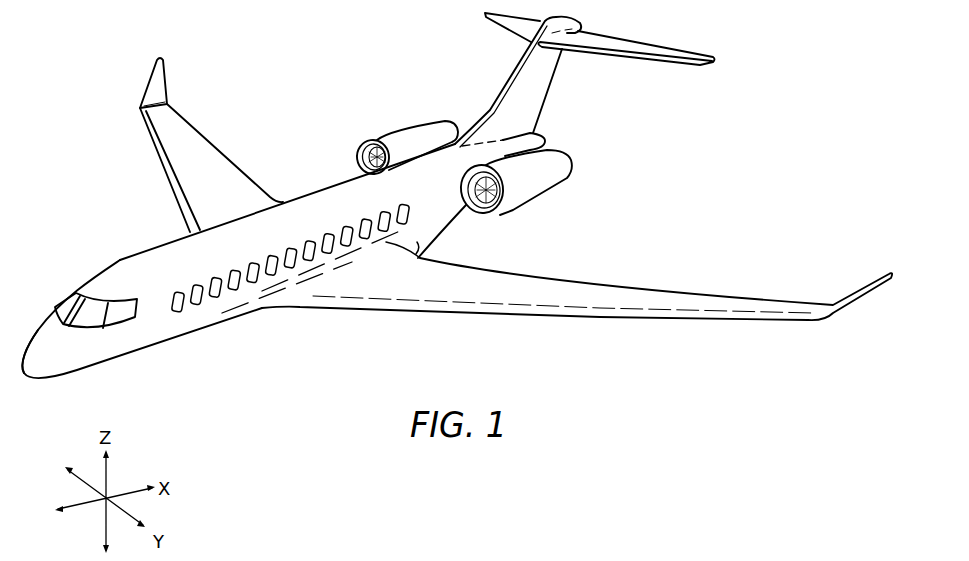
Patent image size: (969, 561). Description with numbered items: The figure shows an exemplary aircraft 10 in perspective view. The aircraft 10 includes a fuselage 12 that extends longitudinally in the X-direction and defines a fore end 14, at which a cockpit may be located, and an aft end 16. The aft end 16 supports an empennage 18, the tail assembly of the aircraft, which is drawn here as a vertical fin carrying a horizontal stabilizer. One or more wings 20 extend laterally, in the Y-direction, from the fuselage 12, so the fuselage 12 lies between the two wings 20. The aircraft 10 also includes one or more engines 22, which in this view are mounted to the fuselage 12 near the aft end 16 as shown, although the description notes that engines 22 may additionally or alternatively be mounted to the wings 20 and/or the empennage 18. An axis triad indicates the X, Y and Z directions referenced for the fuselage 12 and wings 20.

The aircraft 10 is at (455, 245).
The fuselage 12 is at (330, 200).
The fore end 14 is at (22, 384).
The aft end 16 is at (571, 84).
The empennage 18 is at (510, 72).
The wings 20 is at (195, 147).
The engines 22 is at (412, 119).